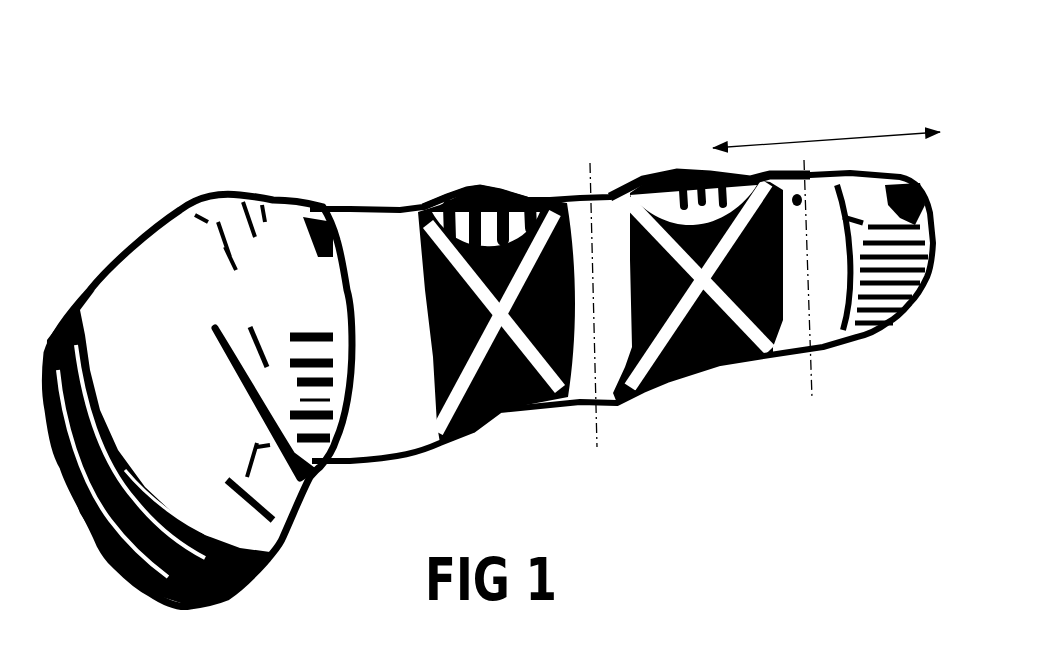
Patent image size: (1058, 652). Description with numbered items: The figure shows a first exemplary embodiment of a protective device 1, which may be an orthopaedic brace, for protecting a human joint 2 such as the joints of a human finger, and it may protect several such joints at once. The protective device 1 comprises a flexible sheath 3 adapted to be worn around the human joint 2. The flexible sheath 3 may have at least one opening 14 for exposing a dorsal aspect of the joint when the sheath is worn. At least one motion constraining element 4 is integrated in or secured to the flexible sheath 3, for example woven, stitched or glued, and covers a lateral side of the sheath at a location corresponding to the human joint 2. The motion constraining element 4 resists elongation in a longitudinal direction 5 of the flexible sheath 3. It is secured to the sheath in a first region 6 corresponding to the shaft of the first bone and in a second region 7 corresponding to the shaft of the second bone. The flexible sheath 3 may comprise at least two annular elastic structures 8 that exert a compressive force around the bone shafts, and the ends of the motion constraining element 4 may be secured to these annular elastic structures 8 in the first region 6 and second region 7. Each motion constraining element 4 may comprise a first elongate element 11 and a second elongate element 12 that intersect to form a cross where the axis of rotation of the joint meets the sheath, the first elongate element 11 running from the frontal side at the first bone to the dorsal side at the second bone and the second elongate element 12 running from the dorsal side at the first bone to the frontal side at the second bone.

The protective device 1 is at (142, 97).
The human joint 2 is at (520, 167).
The flexible sheath 3 is at (698, 367).
The motion constraining element 4 is at (771, 352).
The longitudinal direction 5 is at (827, 140).
The first region 6 is at (597, 423).
The second region 7 is at (813, 385).
The annular elastic structure 8 is at (578, 198).
The first elongate element 11 is at (438, 450).
The second elongate element 12 is at (557, 410).
The opening 14 is at (443, 185).